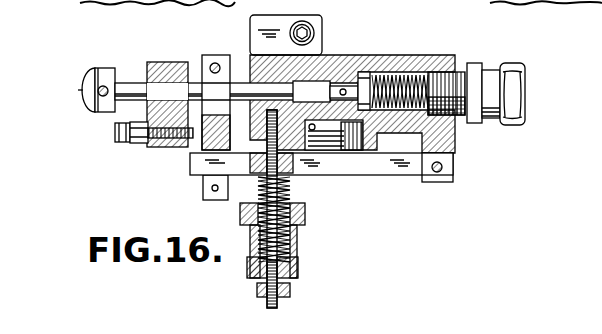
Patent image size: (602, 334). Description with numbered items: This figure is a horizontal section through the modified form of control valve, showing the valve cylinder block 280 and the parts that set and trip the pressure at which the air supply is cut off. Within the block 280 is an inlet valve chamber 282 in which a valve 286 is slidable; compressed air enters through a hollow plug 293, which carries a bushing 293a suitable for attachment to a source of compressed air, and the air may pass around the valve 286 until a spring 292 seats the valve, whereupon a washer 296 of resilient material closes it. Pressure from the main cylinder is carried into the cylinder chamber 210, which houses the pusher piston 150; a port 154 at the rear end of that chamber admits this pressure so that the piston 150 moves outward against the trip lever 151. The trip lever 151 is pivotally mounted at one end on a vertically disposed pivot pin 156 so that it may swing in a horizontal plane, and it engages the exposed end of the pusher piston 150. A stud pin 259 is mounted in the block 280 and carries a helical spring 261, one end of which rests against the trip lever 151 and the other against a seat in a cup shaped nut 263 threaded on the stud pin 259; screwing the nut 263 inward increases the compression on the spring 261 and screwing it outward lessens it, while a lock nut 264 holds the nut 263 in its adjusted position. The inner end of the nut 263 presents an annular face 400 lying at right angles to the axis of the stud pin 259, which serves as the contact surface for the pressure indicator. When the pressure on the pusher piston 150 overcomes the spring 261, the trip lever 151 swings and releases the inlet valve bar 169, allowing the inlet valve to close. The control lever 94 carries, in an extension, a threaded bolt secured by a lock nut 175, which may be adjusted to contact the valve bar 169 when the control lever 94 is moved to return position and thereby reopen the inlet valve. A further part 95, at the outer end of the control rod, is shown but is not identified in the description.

The control lever 94 is at (167, 62).
The knob 95 is at (84, 91).
The inlet valve bar 169 is at (215, 56).
The lock nut 175 is at (144, 143).
The valve cylinder block 280 is at (327, 47).
The washer 296 is at (357, 74).
The valve 286 is at (366, 72).
The inlet valve chamber 282 is at (413, 80).
The spring 292 is at (455, 77).
The plug 293 is at (472, 64).
The bushing 293a is at (520, 90).
The port 154 is at (313, 131).
The pusher piston 150 is at (351, 155).
The cylinder chamber 210 is at (358, 150).
The trip lever 151 is at (402, 172).
The pivot pin 156 is at (454, 167).
The stud pin 259 is at (268, 162).
The helical spring 261 is at (262, 246).
The annular face 400 is at (297, 203).
The cup shaped nut 263 is at (297, 246).
The lock nut 264 is at (292, 290).